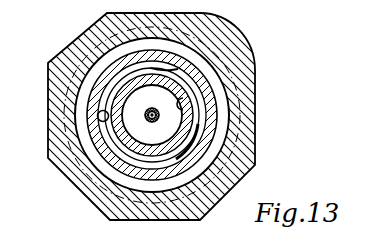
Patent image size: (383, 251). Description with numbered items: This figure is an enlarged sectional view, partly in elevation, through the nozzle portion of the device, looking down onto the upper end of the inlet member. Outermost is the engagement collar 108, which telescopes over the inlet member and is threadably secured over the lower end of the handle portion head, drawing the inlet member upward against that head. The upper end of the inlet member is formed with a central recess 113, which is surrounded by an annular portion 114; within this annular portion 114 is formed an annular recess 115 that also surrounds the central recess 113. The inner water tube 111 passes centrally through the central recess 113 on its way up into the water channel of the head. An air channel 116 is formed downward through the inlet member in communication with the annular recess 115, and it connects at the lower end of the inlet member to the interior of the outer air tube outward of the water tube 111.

The engagement collar 108 is at (72, 170).
The inner water tube 111 is at (159, 119).
The central recess 113 is at (182, 116).
The annular portion 114 is at (180, 88).
The annular recess 115 is at (197, 56).
The air channel 116 is at (103, 111).